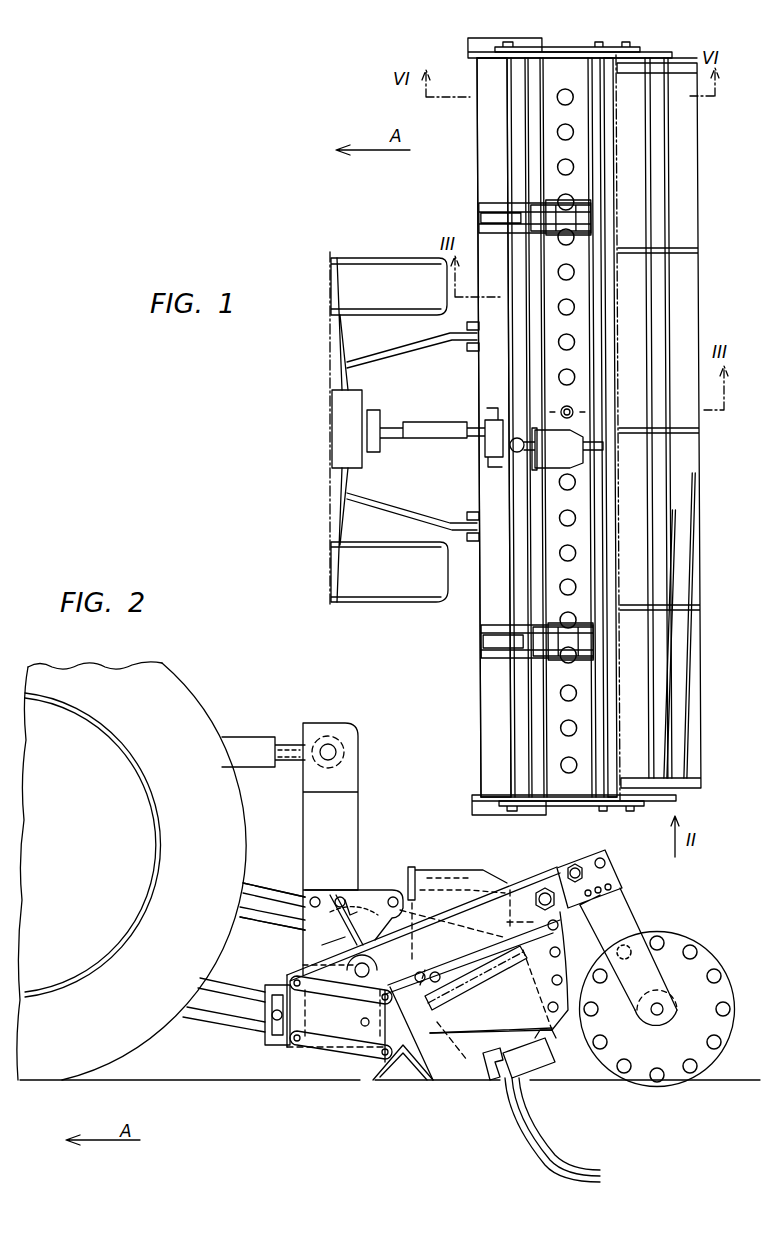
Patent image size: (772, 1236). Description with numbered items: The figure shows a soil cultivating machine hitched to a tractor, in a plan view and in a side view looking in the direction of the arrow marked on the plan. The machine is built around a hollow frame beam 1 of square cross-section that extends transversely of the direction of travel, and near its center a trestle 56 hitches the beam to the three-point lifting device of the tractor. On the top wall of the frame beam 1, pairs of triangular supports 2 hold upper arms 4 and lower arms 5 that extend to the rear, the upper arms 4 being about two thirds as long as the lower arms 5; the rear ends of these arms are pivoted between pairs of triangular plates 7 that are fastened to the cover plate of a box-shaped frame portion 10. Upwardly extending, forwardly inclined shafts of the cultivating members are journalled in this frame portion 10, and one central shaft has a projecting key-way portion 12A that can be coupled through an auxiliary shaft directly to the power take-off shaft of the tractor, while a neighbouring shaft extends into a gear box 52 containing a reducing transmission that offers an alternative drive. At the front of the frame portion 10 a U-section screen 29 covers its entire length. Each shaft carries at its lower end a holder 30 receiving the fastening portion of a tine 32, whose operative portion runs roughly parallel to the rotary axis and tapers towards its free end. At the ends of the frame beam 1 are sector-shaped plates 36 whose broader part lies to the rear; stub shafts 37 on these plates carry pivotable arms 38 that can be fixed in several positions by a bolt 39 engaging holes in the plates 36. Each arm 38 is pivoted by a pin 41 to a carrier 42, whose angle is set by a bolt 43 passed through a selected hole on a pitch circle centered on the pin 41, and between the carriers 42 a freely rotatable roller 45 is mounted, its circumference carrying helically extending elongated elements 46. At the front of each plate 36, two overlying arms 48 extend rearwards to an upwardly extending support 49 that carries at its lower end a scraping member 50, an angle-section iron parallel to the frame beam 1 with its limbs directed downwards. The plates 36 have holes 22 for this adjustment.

In FIG. 1, the hollow frame beam 1 is at (477, 165).
In FIG. 2, the hollow frame beam 1 is at (305, 1050).
In FIG. 1, the pairs of supports 2 is at (480, 232).
In FIG. 2, the pairs of supports 2 is at (300, 935).
In FIG. 2, the upper arms 4 is at (370, 892).
In FIG. 2, the lower arms 5 is at (428, 995).
In FIG. 1, the pairs of plates 7 is at (590, 216).
In FIG. 2, the pairs of plates 7 is at (425, 910).
In FIG. 1, the box-shaped frame portion 10 is at (614, 559).
In FIG. 2, the box-shaped frame portion 10 is at (470, 1057).
In FIG. 1, the key-way portion 12A is at (558, 412).
In FIG. 1, the holes 22 is at (568, 700).
In FIG. 2, the screen 29 is at (488, 1080).
In FIG. 2, the holder 30 is at (545, 1072).
In FIG. 2, the tine 32 is at (505, 1130).
In FIG. 1, the sector-shaped plates 36 is at (480, 60).
In FIG. 2, the sector-shaped plates 36 is at (565, 967).
In FIG. 2, the stub shafts 37 is at (340, 936).
In FIG. 1, the arms 38 is at (558, 56).
In FIG. 2, the arms 38 is at (535, 868).
In FIG. 1, the bolt 39 is at (603, 810).
In FIG. 2, the bolt 39 is at (548, 885).
In FIG. 2, the pin 41 is at (606, 863).
In FIG. 1, the carrier 42 is at (657, 57).
In FIG. 2, the carrier 42 is at (625, 910).
In FIG. 2, the bolt 43 is at (592, 848).
In FIG. 1, the roller 45 is at (705, 236).
In FIG. 2, the roller 45 is at (708, 944).
In FIG. 1, the elongated elements 46 is at (675, 510).
In FIG. 2, the elongated elements 46 is at (712, 1040).
In FIG. 1, the arms 48 is at (470, 38).
In FIG. 2, the arms 48 is at (345, 1032).
In FIG. 2, the support 49 is at (375, 1060).
In FIG. 2, the scraping member 50 is at (388, 1080).
In FIG. 1, the gear box 52 is at (566, 470).
In FIG. 2, the gear box 52 is at (468, 873).
In FIG. 1, the trestle 56 is at (484, 372).
In FIG. 2, the trestle 56 is at (358, 808).